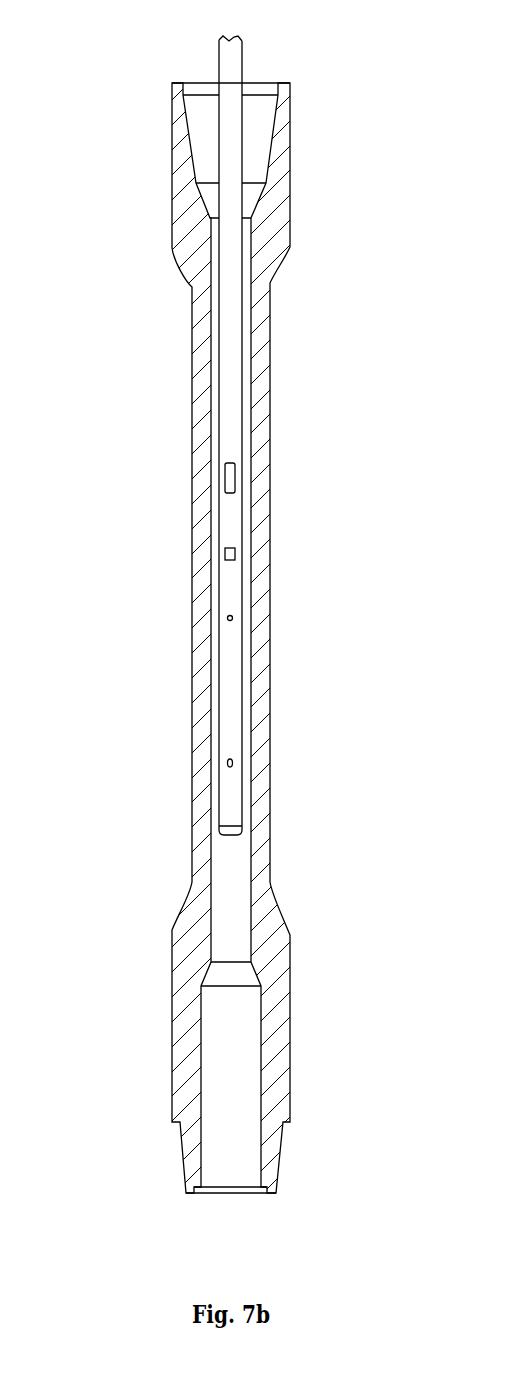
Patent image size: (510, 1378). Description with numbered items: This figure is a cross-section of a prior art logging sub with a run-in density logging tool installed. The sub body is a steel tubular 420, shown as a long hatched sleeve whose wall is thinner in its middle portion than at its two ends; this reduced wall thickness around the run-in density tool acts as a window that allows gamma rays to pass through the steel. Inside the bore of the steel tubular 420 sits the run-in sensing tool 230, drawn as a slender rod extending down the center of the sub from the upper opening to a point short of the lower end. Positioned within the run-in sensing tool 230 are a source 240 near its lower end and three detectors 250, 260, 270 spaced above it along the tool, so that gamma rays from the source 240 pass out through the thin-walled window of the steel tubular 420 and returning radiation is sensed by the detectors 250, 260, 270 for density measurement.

The run-in sensing tool 230 is at (232, 62).
The steel tubular 420 is at (192, 628).
The source 240 is at (233, 765).
The detector 250 is at (233, 618).
The detector 260 is at (236, 556).
The detector 270 is at (236, 478).